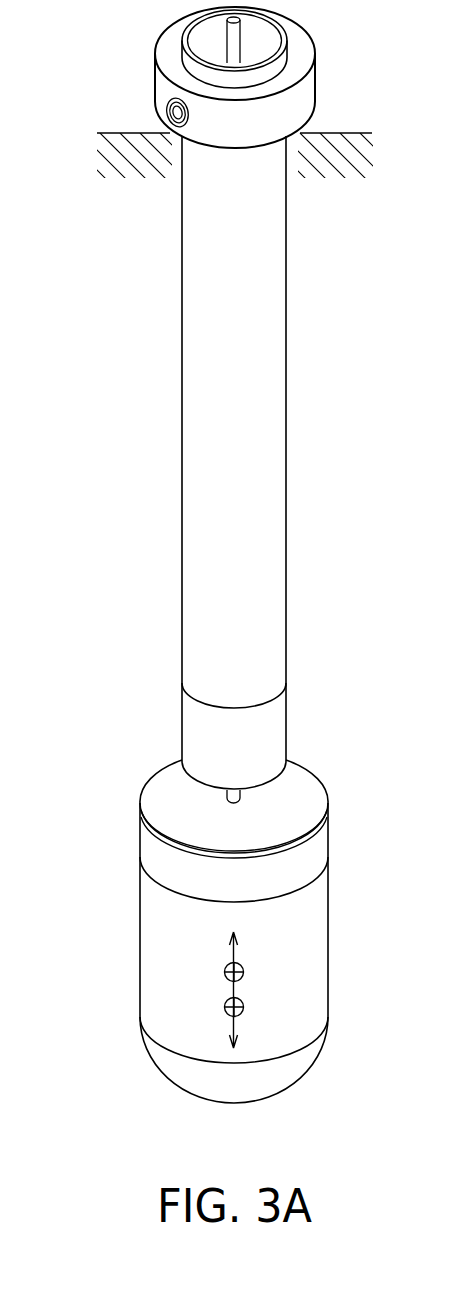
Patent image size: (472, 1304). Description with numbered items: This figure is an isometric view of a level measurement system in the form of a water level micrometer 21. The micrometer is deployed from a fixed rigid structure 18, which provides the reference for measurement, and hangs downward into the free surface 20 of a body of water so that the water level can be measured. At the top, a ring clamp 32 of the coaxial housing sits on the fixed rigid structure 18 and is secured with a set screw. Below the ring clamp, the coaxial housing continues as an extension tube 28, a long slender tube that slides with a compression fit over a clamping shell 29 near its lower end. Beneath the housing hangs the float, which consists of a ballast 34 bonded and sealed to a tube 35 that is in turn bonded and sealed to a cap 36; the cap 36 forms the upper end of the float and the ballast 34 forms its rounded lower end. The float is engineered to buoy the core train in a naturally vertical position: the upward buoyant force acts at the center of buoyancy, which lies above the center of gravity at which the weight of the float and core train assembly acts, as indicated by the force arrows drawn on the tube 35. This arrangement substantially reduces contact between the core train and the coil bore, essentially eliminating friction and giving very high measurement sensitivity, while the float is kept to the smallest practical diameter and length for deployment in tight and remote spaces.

The water level micrometer 21 is at (103, 1111).
The fixed rigid structure 18 is at (130, 133).
The ring clamp 32 is at (157, 54).
The extension tube 28 is at (188, 446).
The clamping shell 29 is at (188, 729).
The cap 36 is at (146, 803).
The free surface 20 is at (150, 877).
The tube 35 is at (145, 958).
The ballast 34 is at (148, 1040).